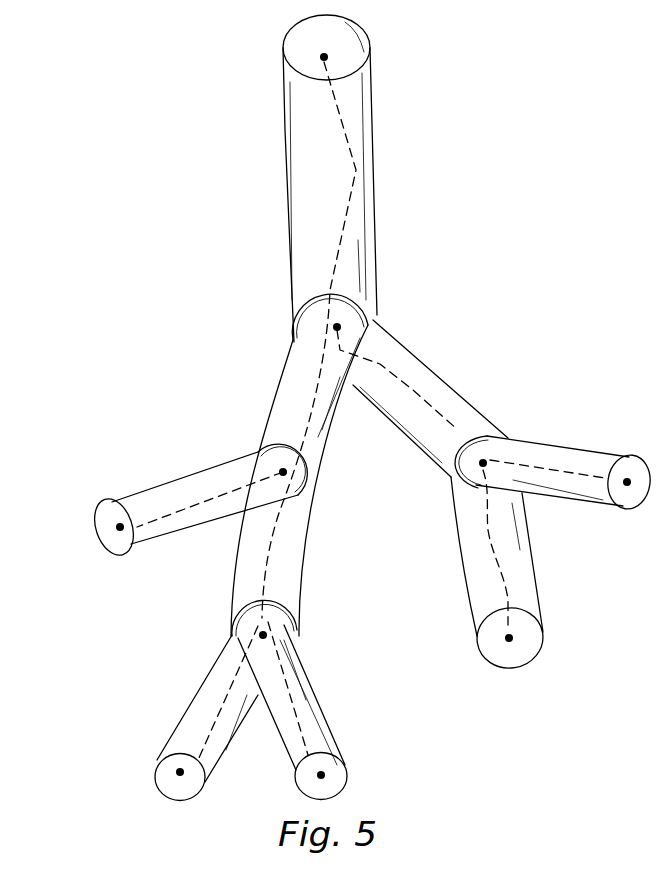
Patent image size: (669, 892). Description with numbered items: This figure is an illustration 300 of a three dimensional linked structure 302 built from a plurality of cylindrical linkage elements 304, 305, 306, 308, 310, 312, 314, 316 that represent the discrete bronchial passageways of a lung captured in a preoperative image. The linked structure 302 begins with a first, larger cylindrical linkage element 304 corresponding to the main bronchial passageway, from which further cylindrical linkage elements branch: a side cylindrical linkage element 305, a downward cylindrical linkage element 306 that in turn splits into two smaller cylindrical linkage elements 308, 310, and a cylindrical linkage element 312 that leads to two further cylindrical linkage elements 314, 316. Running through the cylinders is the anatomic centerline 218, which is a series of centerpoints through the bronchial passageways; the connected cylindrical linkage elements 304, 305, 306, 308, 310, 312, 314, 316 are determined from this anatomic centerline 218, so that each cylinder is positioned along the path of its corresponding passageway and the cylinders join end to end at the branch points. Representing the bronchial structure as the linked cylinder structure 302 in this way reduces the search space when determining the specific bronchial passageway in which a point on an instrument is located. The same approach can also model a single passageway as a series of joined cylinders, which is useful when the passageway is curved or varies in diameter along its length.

The illustration 300 is at (412, 75).
The three dimensional linked structure 302 is at (288, 263).
The cylindrical linkage element 304 is at (284, 113).
The anatomic centerline 218 is at (348, 138).
The cylindrical linkage element 305 is at (188, 475).
The cylindrical linkage element 306 is at (235, 570).
The cylindrical linkage element 308 is at (187, 717).
The cylindrical linkage element 310 is at (320, 696).
The cylindrical linkage element 312 is at (430, 371).
The cylindrical linkage element 314 is at (557, 447).
The cylindrical linkage element 316 is at (537, 567).